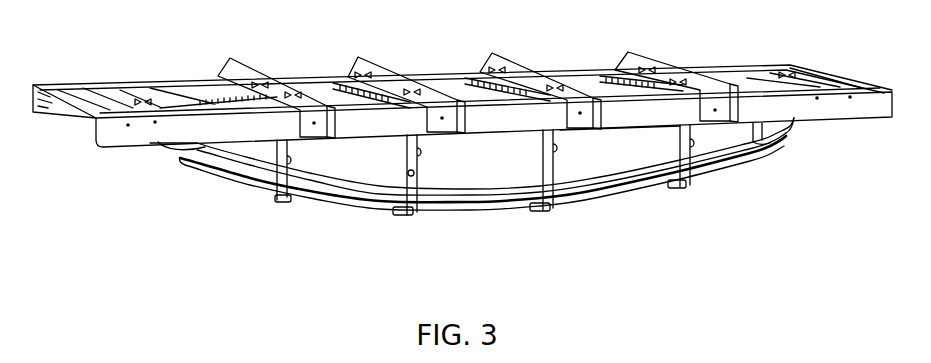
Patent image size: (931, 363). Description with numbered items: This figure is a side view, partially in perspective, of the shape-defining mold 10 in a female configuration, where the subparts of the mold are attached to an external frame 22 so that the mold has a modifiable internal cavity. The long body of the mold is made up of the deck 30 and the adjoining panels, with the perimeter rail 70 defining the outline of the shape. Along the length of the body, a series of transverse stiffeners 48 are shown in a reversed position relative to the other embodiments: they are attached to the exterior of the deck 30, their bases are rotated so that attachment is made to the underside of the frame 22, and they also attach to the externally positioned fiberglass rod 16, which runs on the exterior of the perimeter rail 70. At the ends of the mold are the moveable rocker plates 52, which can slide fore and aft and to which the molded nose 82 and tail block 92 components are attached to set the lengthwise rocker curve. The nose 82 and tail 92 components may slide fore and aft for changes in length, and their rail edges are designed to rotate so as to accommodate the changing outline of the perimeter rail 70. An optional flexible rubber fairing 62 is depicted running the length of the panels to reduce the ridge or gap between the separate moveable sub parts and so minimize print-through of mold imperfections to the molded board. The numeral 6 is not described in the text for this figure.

The shape-defining mold 10 is at (462, 151).
The partition plate 6 is at (668, 83).
The fiberglass rod 16 is at (203, 172).
The external frame 22 is at (97, 147).
The deck 30 is at (607, 152).
The transverse stiffeners 48 is at (283, 200).
The rocker plates 52 is at (110, 92).
The flexible rubber fairing 62 is at (758, 152).
The perimeter rail 70 is at (335, 200).
The molded nose 82 is at (168, 147).
The tail block 92 is at (792, 130).